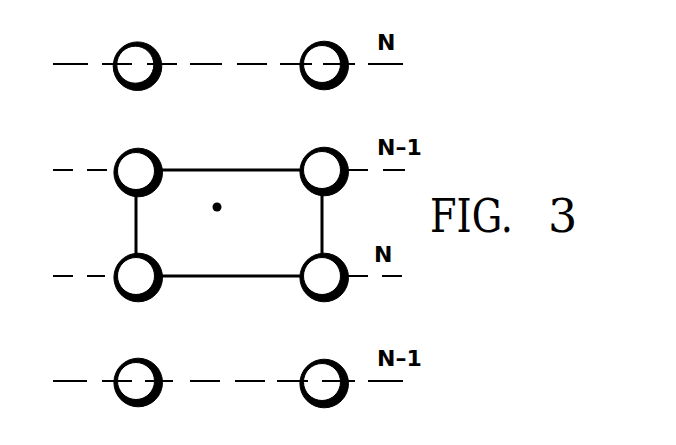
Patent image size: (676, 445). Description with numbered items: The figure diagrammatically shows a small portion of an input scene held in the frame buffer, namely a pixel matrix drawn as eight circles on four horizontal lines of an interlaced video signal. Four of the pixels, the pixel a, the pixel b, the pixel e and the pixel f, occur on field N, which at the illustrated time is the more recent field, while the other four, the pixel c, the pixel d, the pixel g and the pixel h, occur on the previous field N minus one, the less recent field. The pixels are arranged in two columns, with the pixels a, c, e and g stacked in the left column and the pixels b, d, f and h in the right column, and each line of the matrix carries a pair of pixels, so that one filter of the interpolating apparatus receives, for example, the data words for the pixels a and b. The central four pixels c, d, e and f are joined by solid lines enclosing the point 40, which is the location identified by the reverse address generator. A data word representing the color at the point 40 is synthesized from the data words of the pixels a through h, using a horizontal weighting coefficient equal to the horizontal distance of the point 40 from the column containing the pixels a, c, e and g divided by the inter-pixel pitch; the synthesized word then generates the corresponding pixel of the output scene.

The point 40 is at (222, 206).
The pixel a is at (137, 49).
The pixel b is at (324, 49).
The pixel c is at (138, 155).
The pixel d is at (324, 154).
The pixel e is at (138, 293).
The pixel f is at (324, 293).
The pixel g is at (138, 395).
The pixel h is at (324, 396).